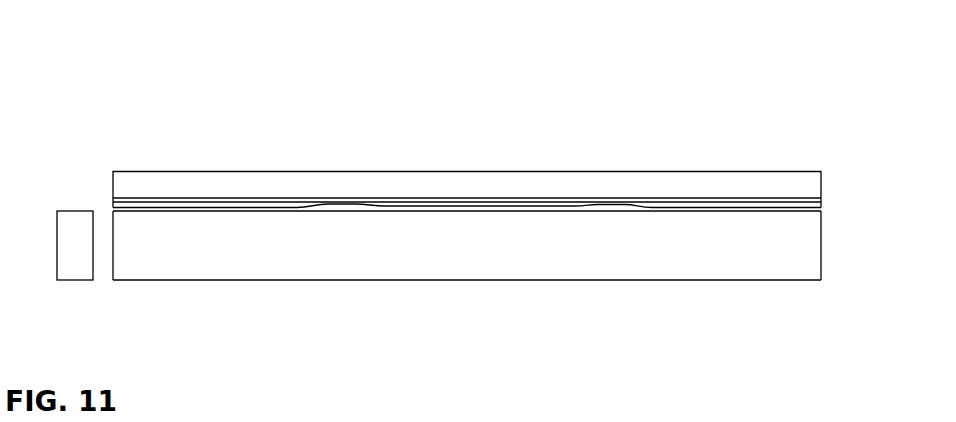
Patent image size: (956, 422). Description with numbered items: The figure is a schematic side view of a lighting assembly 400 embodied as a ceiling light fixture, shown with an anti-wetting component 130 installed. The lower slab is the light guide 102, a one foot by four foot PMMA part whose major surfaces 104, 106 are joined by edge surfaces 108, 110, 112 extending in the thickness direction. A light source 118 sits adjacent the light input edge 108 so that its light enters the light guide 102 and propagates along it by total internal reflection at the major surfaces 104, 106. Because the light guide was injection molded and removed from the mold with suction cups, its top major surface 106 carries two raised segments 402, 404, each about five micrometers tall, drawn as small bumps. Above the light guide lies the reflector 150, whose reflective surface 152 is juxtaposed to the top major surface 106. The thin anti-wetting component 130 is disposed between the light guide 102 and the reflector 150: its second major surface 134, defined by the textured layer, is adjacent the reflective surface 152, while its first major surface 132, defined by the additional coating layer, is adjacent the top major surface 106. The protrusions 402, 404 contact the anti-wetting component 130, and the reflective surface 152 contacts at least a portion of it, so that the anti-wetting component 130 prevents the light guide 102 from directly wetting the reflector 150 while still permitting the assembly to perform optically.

The lighting assembly 400 is at (116, 48).
The light guide 102 is at (395, 268).
The major surface 104 is at (727, 280).
The top major surface 106 is at (204, 207).
The light input edge 108 is at (112, 272).
The edge surface 110 is at (323, 262).
The edge surface 112 is at (822, 238).
The light source 118 is at (70, 211).
The anti-wetting component 130 is at (297, 207).
The first major surface 132 is at (783, 200).
The second major surface 134 is at (450, 199).
The reflector 150 is at (552, 187).
The reflective surface 152 is at (680, 199).
The raised segment 402 is at (322, 222).
The raised segment 404 is at (604, 226).